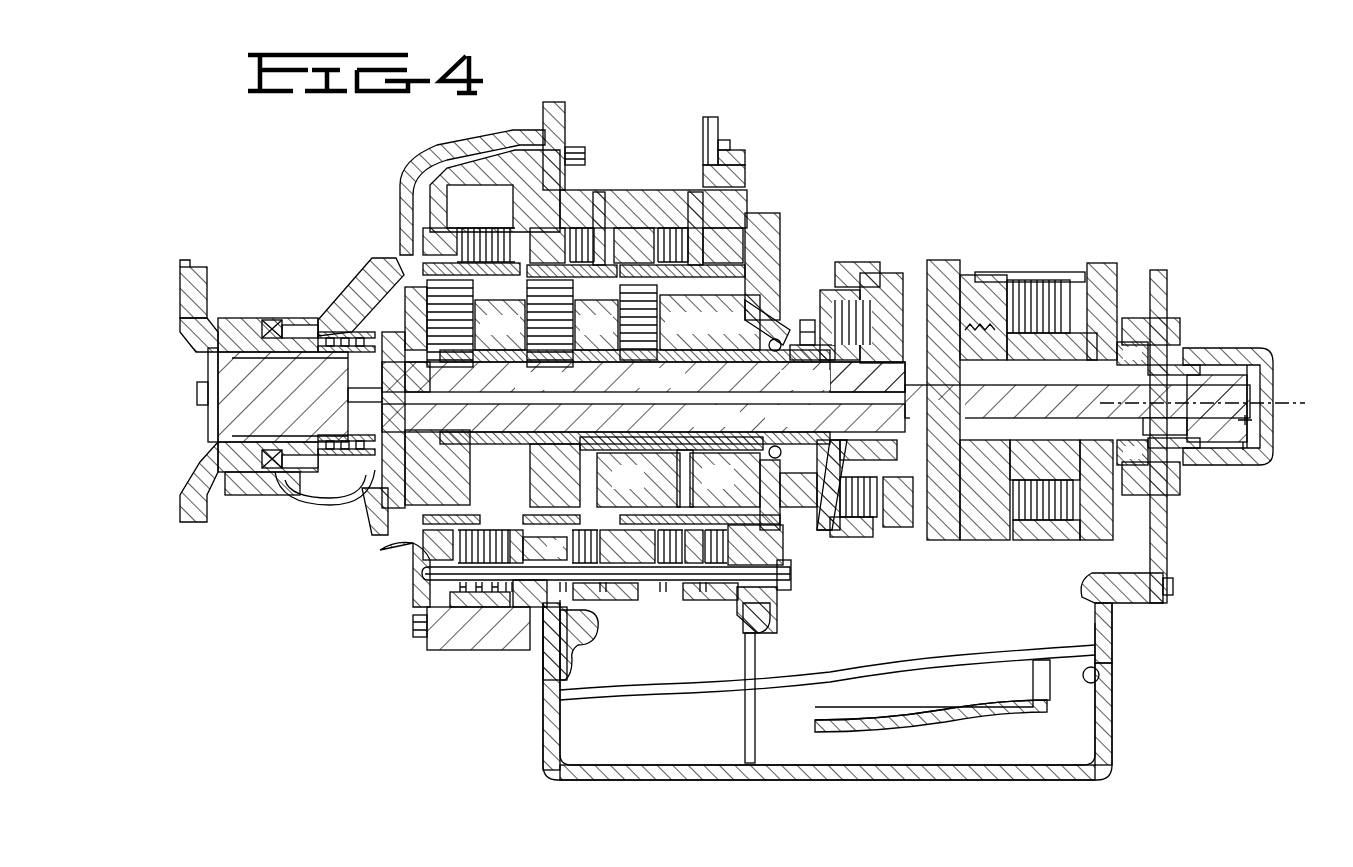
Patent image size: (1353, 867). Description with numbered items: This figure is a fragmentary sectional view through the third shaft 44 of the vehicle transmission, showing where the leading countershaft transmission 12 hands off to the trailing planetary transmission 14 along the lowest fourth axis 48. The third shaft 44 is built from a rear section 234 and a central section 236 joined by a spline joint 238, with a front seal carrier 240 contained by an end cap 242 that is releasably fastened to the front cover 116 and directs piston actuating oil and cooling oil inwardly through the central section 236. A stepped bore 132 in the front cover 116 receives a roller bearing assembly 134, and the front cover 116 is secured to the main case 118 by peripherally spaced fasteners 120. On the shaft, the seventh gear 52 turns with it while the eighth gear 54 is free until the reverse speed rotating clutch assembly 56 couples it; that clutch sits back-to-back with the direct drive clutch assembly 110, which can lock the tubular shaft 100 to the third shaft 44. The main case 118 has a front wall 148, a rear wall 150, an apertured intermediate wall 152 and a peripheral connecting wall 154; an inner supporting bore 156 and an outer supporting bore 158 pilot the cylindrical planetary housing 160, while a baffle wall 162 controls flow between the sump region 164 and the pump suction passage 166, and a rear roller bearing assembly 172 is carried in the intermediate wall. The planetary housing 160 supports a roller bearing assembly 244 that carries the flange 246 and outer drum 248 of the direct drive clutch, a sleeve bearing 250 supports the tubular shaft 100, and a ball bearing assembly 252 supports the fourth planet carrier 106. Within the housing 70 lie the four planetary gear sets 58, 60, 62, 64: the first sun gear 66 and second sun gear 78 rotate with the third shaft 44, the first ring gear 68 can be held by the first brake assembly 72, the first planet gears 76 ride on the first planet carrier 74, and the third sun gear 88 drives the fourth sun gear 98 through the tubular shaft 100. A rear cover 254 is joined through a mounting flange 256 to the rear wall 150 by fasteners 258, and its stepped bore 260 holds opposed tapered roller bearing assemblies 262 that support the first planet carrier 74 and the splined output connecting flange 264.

The countershaft transmission 12 is at (1020, 535).
The planetary transmission 14 is at (447, 650).
The third shaft 44 is at (1252, 420).
The fourth axis 48 is at (1290, 400).
The seventh gear 52 is at (943, 540).
The eighth gear 54 is at (1092, 540).
The reverse speed rotating clutch assembly 56 is at (1037, 272).
The first planetary gear set 58 is at (405, 272).
The second planetary gear set 60 is at (522, 235).
The third planetary gear set 62 is at (612, 238).
The fourth planetary gear set 64 is at (693, 238).
The first sun gear 66 is at (445, 430).
The first ring gear 68 is at (410, 528).
The housing 70 is at (432, 187).
The first brake assembly 72 is at (435, 586).
The first planet carrier 74 is at (285, 392).
The first planet gears 76 is at (432, 313).
The second sun gear 78 is at (555, 430).
The third sun gear 88 is at (640, 449).
The fourth sun gear 98 is at (730, 449).
The tubular shaft 100 is at (706, 362).
The fourth planet carrier 106 is at (745, 495).
The direct drive clutch assembly 110 is at (889, 373).
The front cover 116 is at (1162, 604).
The main case 118 is at (535, 760).
The fasteners 120 is at (1175, 588).
The stepped bore 132 is at (1183, 348).
The roller bearing assembly 134 is at (1138, 345).
The front wall 148 is at (1107, 638).
The rear wall 150 is at (565, 116).
The intermediate wall 152 is at (718, 128).
The peripheral connecting wall 154 is at (845, 775).
The inner supporting bore 156 is at (780, 592).
The outer supporting bore 158 is at (598, 618).
The planetary housing 160 is at (628, 192).
The baffle wall 162 is at (830, 708).
The sump region 164 is at (676, 732).
The pump suction passage 166 is at (1107, 680).
The rear roller bearing assembly 172 is at (745, 156).
The rear section 234 is at (560, 400).
The central section 236 is at (955, 422).
The spline joint 238 is at (850, 372).
The front seal carrier 240 is at (1243, 448).
The end cap 242 is at (1270, 352).
The roller bearing assembly 244 is at (808, 318).
The flange 246 is at (822, 540).
The outer drum 248 is at (862, 262).
The sleeve bearing 250 is at (812, 414).
The ball bearing assembly 252 is at (760, 440).
The rear cover 254 is at (423, 163).
The mounting flange 256 is at (535, 645).
The fasteners 258 is at (412, 625).
The stepped bore 260 is at (300, 322).
The tapered roller bearing assemblies 262 is at (320, 445).
The output connecting flange 264 is at (194, 265).